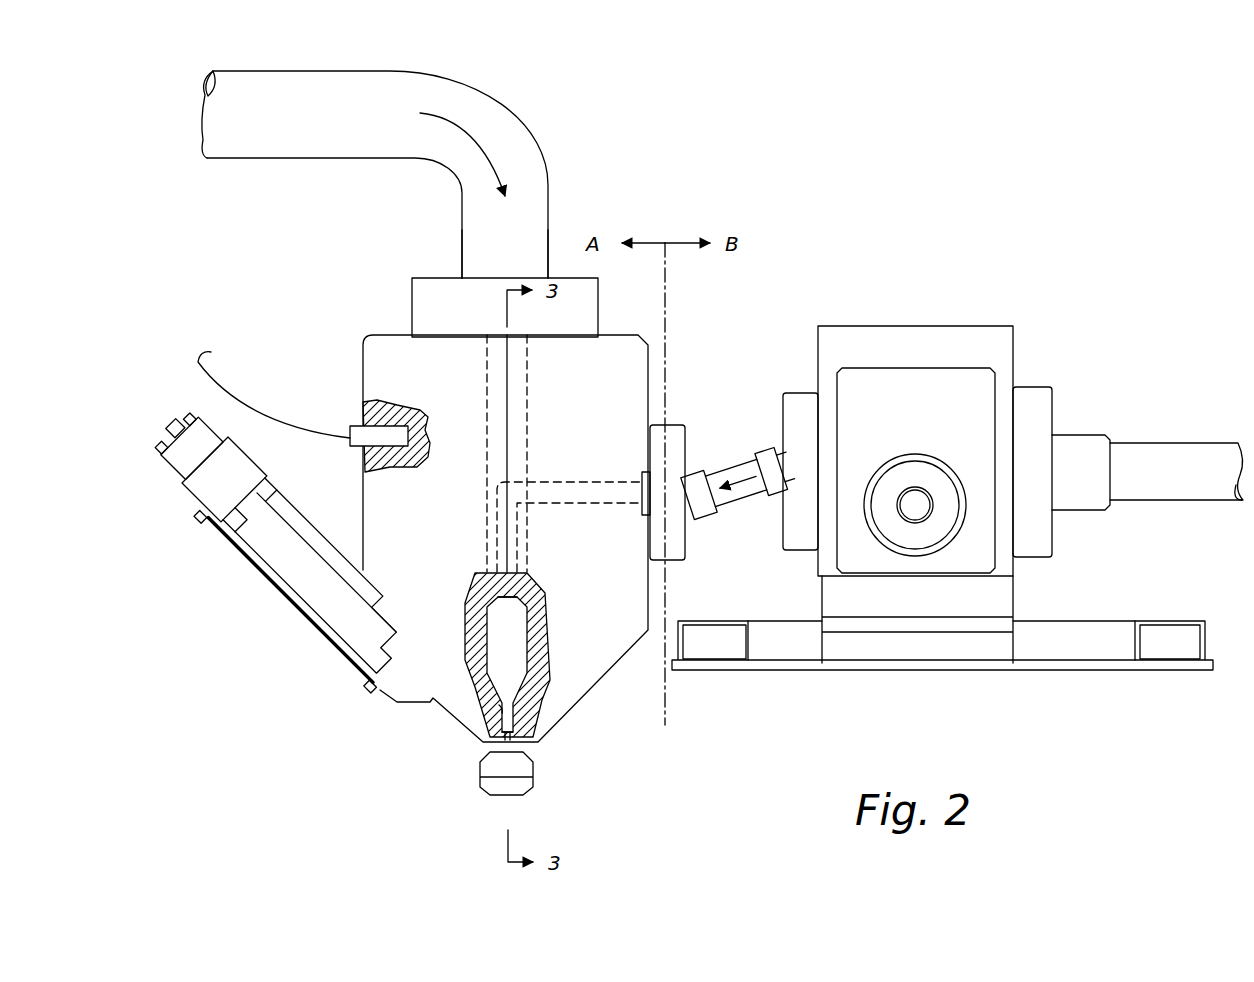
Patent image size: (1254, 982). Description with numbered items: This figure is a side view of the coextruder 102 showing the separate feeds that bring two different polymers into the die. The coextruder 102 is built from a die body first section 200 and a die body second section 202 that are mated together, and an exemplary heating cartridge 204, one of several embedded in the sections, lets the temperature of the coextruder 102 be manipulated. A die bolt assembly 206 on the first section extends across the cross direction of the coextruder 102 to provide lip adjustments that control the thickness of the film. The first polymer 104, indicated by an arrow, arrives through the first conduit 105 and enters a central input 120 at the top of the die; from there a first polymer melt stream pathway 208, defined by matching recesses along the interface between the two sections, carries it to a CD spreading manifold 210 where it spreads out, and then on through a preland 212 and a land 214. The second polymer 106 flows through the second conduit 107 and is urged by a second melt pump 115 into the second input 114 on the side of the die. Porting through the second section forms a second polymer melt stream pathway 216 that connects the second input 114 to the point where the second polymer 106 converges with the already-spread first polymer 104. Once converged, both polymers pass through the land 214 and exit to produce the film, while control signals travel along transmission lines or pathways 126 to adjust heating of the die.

The coextruder 102 is at (386, 334).
The first polymer 104 is at (492, 114).
The first conduit 105 is at (461, 234).
The second polymer 106 is at (740, 478).
The second conduit 107 is at (1185, 443).
The second input 114 is at (688, 543).
The second melt pump 115 is at (918, 325).
The central input 120 is at (490, 336).
The transmission lines or pathways 126 is at (246, 395).
The die body first section 200 is at (467, 453).
The die body second section 202 is at (560, 453).
The heating cartridge 204 is at (358, 450).
The die bolt assembly 206 is at (190, 495).
The first polymer melt stream pathway 208 is at (525, 430).
The CD spreading manifold 210 is at (523, 633).
The preland 212 is at (498, 710).
The land 214 is at (527, 738).
The second polymer melt stream pathway 216 is at (590, 487).